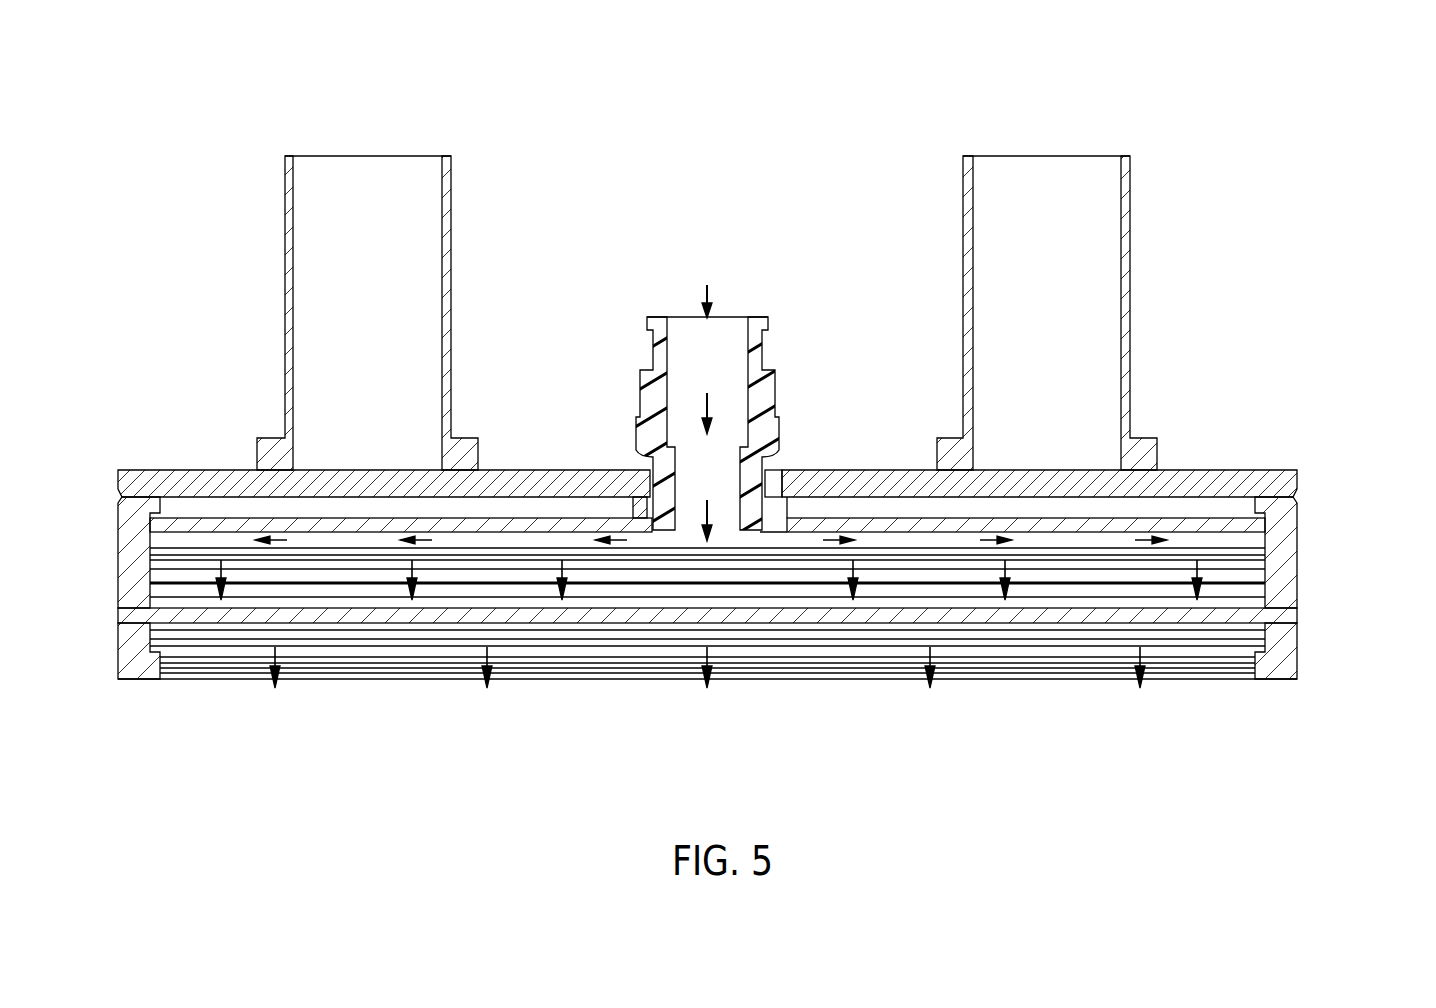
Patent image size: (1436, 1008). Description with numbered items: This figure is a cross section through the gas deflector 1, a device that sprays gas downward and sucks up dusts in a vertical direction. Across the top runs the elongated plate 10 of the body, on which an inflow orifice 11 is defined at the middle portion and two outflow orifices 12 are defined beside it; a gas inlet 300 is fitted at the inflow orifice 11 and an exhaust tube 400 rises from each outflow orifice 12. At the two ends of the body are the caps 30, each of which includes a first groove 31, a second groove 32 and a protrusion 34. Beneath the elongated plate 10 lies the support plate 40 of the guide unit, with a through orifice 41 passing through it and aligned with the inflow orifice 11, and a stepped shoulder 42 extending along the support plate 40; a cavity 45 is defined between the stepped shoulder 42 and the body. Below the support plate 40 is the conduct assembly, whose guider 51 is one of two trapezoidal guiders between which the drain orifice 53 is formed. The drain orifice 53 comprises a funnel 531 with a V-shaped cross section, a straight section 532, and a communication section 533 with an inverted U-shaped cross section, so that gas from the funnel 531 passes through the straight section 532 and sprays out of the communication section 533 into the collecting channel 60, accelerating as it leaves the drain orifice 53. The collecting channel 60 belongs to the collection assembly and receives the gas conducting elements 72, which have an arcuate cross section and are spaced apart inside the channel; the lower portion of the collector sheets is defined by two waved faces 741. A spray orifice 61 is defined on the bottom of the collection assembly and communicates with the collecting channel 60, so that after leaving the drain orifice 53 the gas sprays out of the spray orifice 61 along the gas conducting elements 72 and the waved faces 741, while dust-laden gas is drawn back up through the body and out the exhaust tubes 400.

The gas deflector 1 is at (179, 262).
The elongated plate 10 is at (151, 468).
The inflow orifice 11 is at (777, 483).
The outflow orifice 12 is at (352, 480).
The cap 30 is at (113, 510).
The first groove 31 is at (150, 536).
The second groove 32 is at (150, 602).
The protrusion 34 is at (1258, 663).
The support plate 40 is at (891, 517).
The through orifice 41 is at (763, 540).
The stepped shoulder 42 is at (630, 516).
The cavity 45 is at (498, 500).
The guider 51 is at (1183, 548).
The drain orifice 53 is at (793, 505).
The funnel 531 is at (1237, 552).
The straight section 532 is at (1247, 563).
The communication section 533 is at (759, 602).
The collecting channel 60 is at (632, 605).
The spray orifice 61 is at (378, 680).
The gas conducting element 72 is at (1100, 613).
The waved face 741 is at (880, 655).
The gas inlet 300 is at (737, 311).
The exhaust tube 400 is at (452, 258).